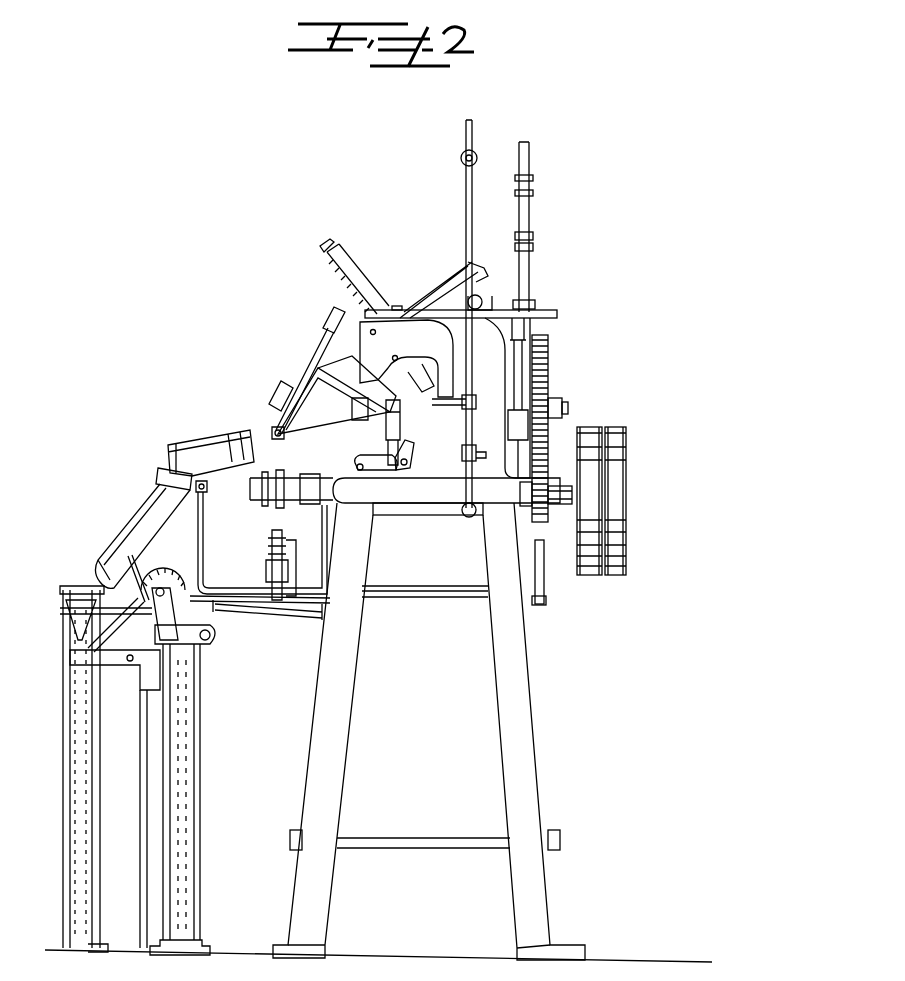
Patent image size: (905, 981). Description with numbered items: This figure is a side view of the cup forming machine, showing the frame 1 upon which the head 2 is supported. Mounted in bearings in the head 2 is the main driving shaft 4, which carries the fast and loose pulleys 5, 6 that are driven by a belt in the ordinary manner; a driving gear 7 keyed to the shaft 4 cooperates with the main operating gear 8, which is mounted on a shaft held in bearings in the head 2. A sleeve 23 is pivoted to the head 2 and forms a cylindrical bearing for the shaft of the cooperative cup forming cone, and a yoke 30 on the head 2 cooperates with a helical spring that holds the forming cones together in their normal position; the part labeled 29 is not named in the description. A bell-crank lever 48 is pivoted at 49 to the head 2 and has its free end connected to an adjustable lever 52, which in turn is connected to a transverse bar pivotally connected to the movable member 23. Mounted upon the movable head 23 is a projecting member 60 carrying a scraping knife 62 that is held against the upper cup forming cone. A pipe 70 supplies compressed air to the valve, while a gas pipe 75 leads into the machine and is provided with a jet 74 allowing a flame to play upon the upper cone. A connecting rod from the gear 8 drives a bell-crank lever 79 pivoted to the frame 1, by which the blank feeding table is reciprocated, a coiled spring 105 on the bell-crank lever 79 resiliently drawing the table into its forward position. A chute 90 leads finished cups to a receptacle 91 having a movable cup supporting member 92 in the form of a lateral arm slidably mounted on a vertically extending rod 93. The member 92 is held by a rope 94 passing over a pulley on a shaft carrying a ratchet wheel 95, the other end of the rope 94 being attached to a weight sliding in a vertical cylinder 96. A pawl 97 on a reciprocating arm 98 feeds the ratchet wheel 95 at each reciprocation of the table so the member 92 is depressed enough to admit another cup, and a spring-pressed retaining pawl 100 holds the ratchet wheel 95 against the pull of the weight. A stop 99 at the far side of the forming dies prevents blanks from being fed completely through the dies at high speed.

The frame 1 is at (524, 670).
The head 2 is at (490, 358).
The main driving shaft 4 is at (555, 506).
The fast pulley 5 is at (583, 430).
The loose pulley 6 is at (618, 430).
The driving gear 7 is at (531, 508).
The main operating gear 8 is at (549, 372).
The sleeve 23 is at (440, 292).
The bracket 29 is at (384, 334).
The yoke 30 is at (352, 278).
The bell-crank lever 48 is at (400, 470).
The pivot 49 is at (360, 472).
The adjustable lever 52 is at (401, 458).
The projecting member 60 is at (318, 350).
The scraping knife 62 is at (278, 386).
The pipe 70 is at (531, 216).
The jet 74 is at (366, 409).
The gas pipe 75 is at (466, 224).
The bell-crank lever 79 is at (545, 580).
The chute 90 is at (160, 530).
The receptacle 91 is at (72, 712).
The cup supporting member 92 is at (118, 668).
The vertically extending rod 93 is at (142, 740).
The rope 94 is at (124, 622).
The ratchet wheel 95 is at (160, 572).
The vertical cylinder 96 is at (202, 688).
The pawl 97 is at (192, 596).
The reciprocating arm 98 is at (222, 608).
The stop 99 is at (272, 432).
The retaining pawl 100 is at (180, 614).
The coiled spring 105 is at (270, 546).